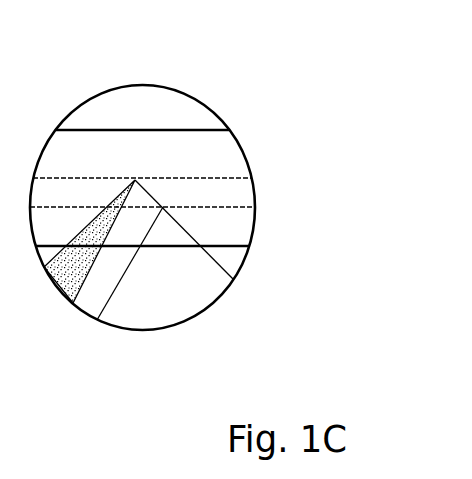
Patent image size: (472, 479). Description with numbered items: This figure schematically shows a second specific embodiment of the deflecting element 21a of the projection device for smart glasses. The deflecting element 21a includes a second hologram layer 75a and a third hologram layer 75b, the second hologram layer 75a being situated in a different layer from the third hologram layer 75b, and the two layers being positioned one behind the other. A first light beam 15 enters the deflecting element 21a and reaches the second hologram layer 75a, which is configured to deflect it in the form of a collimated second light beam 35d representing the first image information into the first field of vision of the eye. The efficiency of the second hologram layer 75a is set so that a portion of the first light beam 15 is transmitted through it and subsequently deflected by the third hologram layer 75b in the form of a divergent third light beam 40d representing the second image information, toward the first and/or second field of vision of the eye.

The deflecting element 21a is at (153, 130).
The third hologram layer 75b is at (203, 177).
The second hologram layer 75a is at (216, 206).
The first light beam 15 is at (215, 260).
The third light beam 40d is at (56, 277).
The second light beam 35d is at (127, 273).